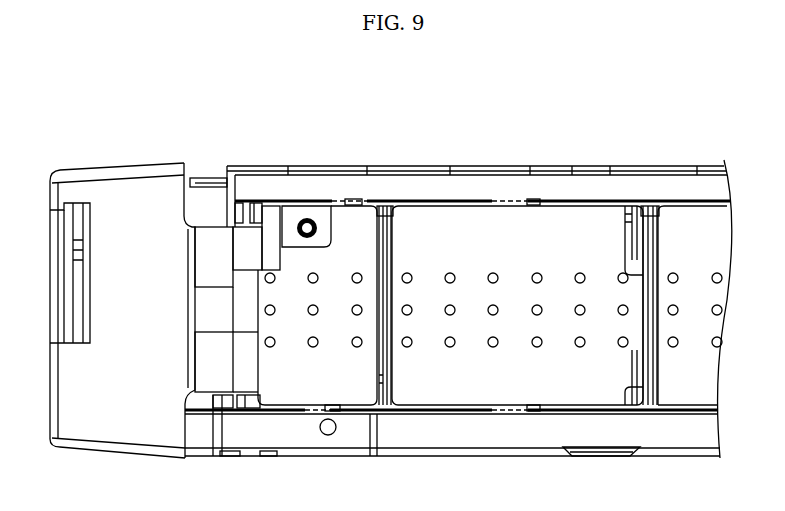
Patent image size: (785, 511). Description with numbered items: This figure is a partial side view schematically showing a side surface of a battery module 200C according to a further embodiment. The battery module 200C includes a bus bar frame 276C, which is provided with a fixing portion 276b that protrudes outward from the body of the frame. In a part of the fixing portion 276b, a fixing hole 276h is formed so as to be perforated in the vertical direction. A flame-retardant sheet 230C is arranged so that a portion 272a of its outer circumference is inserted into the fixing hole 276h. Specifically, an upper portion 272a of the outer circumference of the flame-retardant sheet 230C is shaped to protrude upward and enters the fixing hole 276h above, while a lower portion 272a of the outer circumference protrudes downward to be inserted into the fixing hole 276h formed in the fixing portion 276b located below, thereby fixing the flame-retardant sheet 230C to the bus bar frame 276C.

The battery module 200C is at (163, 95).
The bus bar frame 276C is at (244, 156).
The flame-retardant sheet 230C is at (340, 230).
The fixing portion 276b is at (320, 200).
The portion of the outer circumference of the flame-retardant sheet 272a is at (348, 200).
The fixing hole 276h is at (358, 200).